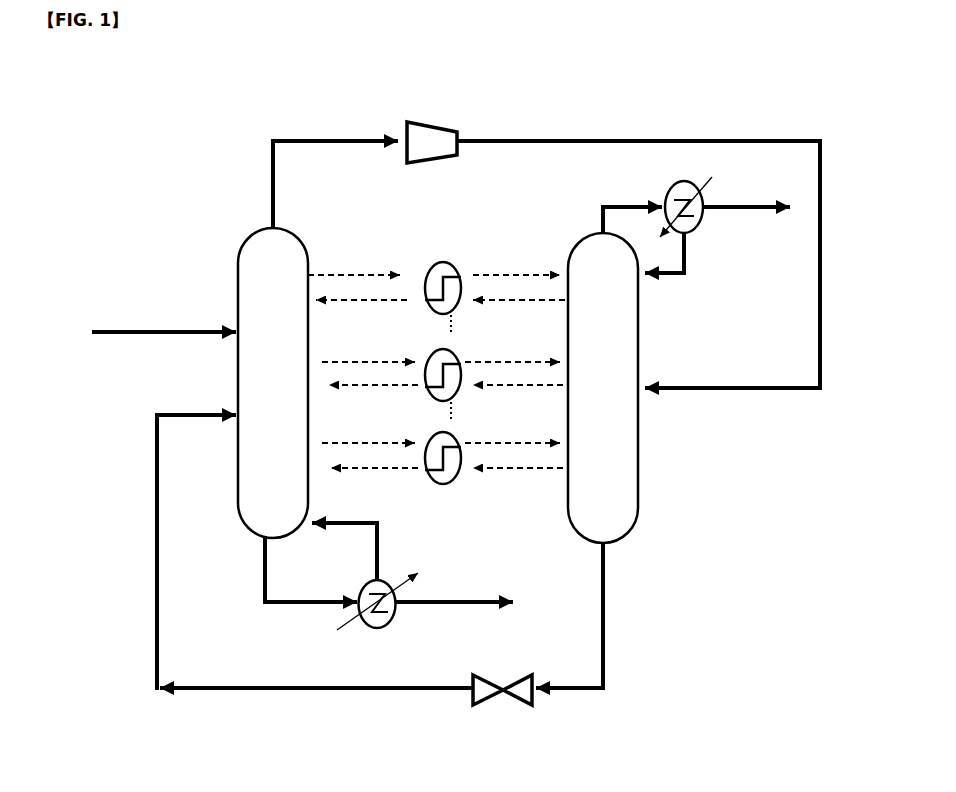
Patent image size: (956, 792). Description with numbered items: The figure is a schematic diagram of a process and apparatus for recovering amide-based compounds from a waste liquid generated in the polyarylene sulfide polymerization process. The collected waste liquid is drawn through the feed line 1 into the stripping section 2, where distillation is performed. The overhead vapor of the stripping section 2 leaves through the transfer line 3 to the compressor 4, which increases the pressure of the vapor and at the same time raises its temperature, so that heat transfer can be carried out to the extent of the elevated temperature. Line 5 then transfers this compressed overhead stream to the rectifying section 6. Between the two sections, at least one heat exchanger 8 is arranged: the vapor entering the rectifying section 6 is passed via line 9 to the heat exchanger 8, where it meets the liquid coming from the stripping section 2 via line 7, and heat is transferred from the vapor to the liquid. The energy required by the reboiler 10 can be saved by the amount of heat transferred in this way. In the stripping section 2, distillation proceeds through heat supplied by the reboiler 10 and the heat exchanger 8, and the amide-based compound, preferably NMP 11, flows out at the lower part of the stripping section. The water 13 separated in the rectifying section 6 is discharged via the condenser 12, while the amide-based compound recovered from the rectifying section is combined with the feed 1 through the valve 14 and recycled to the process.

The feed line 1 is at (164, 316).
The stripping section 2 is at (240, 278).
The transfer line of stripping section and compressor 3 is at (316, 184).
The compressor 4 is at (433, 128).
The line for transferring the overhead stream to the rectifying section 5 is at (638, 253).
The rectifying section 6 is at (640, 416).
The transfer line of stripping section and heat exchanger 7 is at (363, 355).
The heat exchanger 8 is at (450, 385).
The transfer line of rectifying section and heat exchanger 9 is at (515, 355).
The reboiler 10 is at (348, 589).
The NMP 11 is at (471, 629).
The condenser 12 is at (673, 213).
The water 13 is at (758, 228).
The valve 14 is at (532, 638).